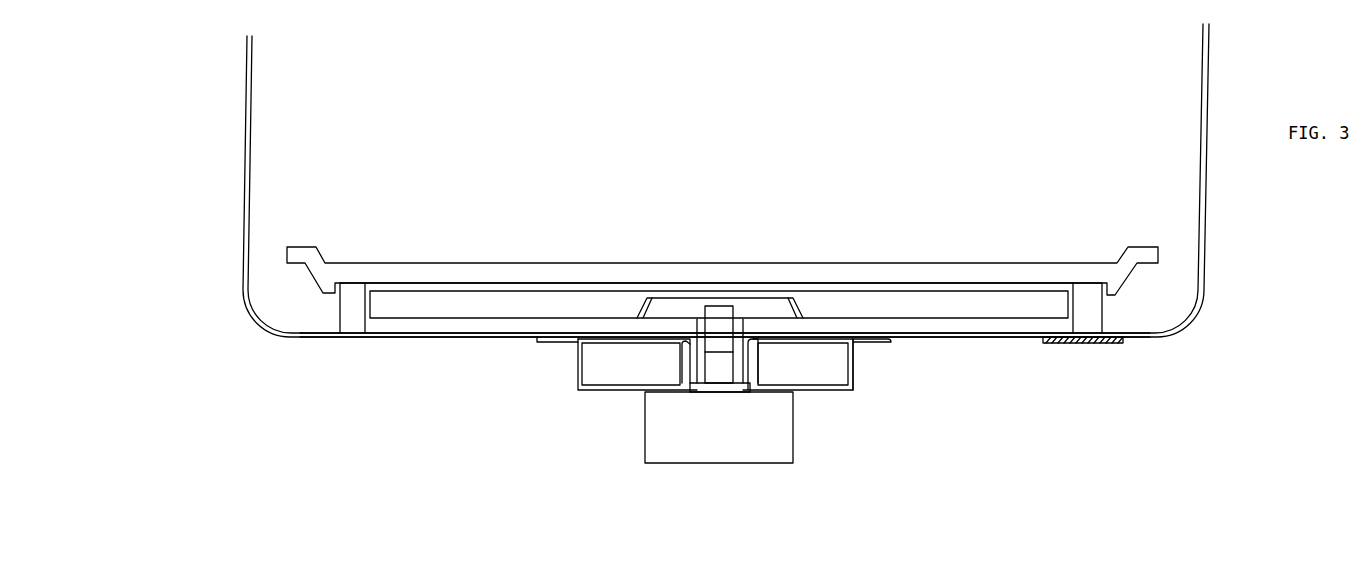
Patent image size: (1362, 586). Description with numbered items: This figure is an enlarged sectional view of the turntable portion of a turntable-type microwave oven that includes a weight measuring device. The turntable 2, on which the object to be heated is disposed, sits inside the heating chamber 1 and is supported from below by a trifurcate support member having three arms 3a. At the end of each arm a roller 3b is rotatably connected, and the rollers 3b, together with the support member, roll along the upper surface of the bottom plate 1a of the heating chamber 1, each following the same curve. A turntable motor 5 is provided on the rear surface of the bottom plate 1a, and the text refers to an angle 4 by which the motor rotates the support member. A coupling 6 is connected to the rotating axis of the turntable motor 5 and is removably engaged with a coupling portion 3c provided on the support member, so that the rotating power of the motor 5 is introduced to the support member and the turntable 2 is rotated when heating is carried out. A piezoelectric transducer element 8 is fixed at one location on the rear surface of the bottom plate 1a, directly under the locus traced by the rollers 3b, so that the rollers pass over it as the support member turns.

The heating chamber 1 is at (240, 233).
The bottom plate 1a is at (963, 338).
The turntable 2 is at (510, 273).
The arms 3a is at (977, 302).
The rollers 3b is at (1088, 307).
The coupling portion 3c is at (803, 308).
The angle 4 is at (850, 392).
The turntable motor 5 is at (773, 433).
The coupling 6 is at (773, 305).
The piezoelectric transducer element 8 is at (1087, 344).